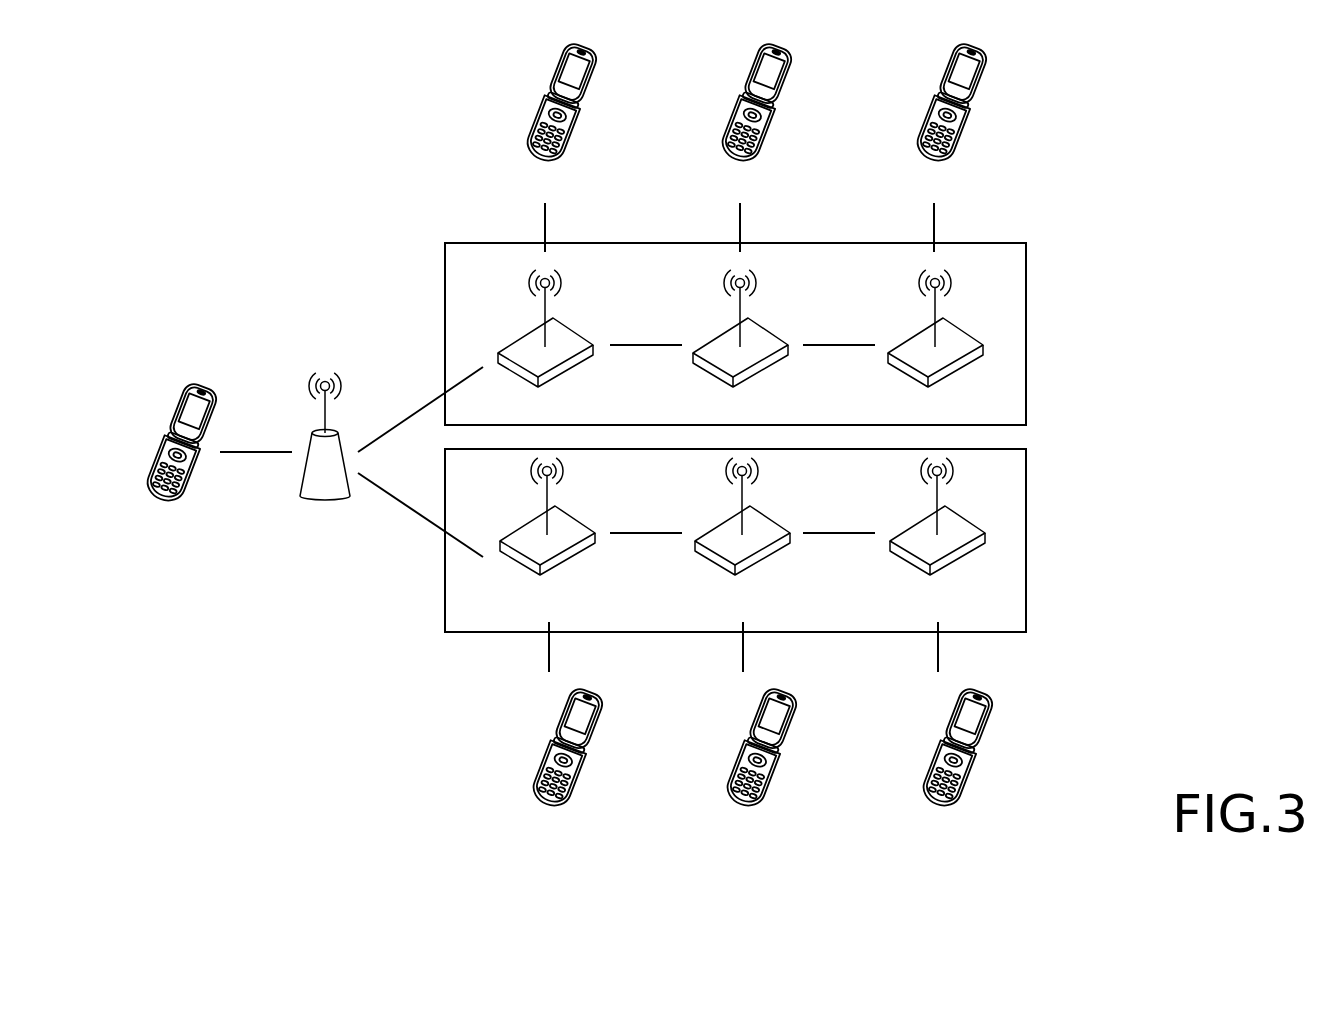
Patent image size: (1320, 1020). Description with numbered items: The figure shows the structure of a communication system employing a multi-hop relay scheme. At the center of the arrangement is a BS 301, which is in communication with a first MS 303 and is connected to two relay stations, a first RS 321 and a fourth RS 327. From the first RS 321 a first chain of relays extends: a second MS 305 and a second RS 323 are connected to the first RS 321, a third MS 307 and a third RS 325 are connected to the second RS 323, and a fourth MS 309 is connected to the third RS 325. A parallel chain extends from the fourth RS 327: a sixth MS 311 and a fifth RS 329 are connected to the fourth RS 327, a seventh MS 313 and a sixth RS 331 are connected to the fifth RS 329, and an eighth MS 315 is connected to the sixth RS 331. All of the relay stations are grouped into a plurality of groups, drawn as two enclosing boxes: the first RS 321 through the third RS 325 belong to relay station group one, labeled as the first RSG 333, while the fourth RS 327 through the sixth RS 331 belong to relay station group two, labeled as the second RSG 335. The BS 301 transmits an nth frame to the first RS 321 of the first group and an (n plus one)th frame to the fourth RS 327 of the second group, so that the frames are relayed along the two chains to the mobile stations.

The BS 301 is at (325, 361).
The first MS 303 is at (153, 456).
The second MS 305 is at (598, 90).
The third MS 307 is at (793, 90).
The fourth MS 309 is at (988, 90).
The sixth MS 311 is at (604, 736).
The seventh MS 313 is at (798, 736).
The eighth MS 315 is at (994, 736).
The first RS 321 is at (563, 284).
The second RS 323 is at (758, 284).
The third RS 325 is at (953, 284).
The fourth RS 327 is at (565, 472).
The fifth RS 329 is at (760, 472).
The sixth RS 331 is at (955, 472).
The first relay station group (RSG) 333 is at (445, 301).
The second relay station group (RSG) 335 is at (445, 578).